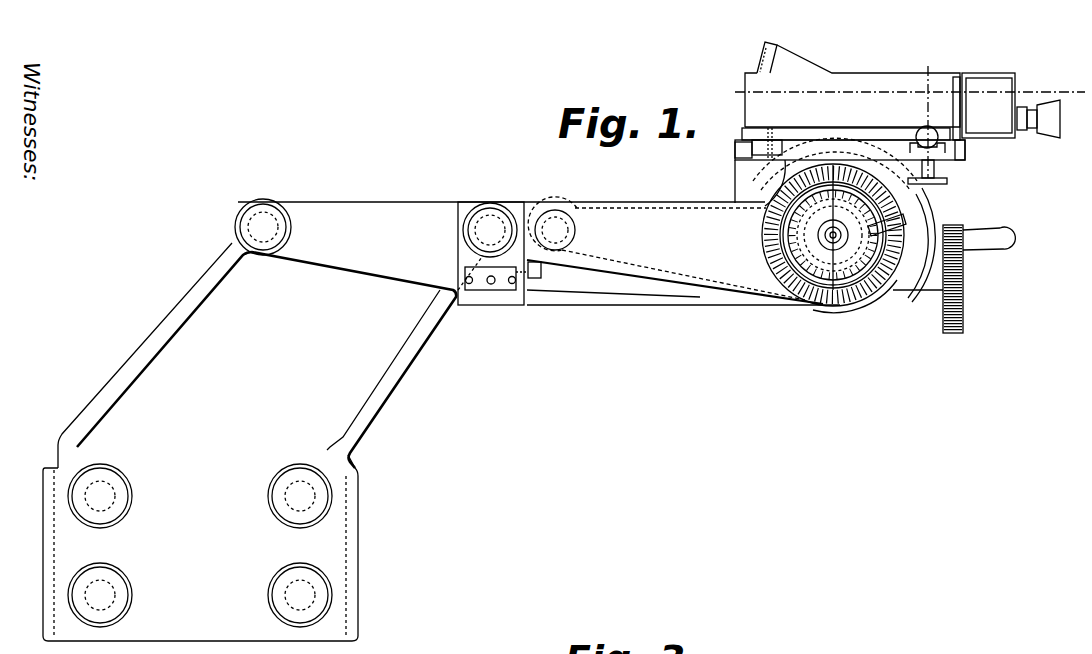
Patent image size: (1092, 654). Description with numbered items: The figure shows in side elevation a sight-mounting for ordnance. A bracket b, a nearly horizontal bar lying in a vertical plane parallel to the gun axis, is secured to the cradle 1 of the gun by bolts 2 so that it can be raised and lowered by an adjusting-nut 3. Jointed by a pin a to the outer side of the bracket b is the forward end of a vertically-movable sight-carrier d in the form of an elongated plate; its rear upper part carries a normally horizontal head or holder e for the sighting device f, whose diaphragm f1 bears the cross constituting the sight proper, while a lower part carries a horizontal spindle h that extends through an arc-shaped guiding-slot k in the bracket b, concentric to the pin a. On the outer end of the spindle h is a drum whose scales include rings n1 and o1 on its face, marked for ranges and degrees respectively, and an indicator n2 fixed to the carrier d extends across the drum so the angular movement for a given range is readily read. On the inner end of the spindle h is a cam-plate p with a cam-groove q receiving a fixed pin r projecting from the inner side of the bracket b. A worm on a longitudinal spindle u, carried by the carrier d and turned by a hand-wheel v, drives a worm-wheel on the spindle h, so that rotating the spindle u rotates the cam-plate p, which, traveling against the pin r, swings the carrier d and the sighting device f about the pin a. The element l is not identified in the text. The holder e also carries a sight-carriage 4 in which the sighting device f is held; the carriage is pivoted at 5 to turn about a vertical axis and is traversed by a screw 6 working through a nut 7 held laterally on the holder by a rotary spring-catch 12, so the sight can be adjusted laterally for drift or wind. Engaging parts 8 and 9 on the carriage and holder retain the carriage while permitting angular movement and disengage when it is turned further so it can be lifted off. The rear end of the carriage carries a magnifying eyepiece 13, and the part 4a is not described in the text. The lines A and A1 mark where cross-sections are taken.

The cradle 1 is at (318, 352).
The bolts 2 is at (379, 252).
The adjusting-nut 3 is at (503, 292).
The pin a is at (555, 230).
The bracket b is at (610, 300).
The arm brace l is at (822, 312).
The sight-carrier d is at (666, 248).
The head or holder e is at (760, 183).
The sighting device f is at (768, 130).
The diaphragm f1 is at (760, 60).
The sight-carriage 4 is at (910, 89).
The magnifying eyepiece 13 is at (998, 88).
The eyepiece 4a is at (964, 136).
The pivot 5 is at (742, 133).
The engaging parts 8 is at (738, 158).
The engaging parts 9 is at (738, 148).
The section line A A is at (833, 170).
The pin r is at (836, 150).
The cam-groove q is at (922, 216).
The rotary spring-catch or bolt 12 is at (946, 186).
The nut 7 is at (920, 149).
The traversing screw 6 is at (922, 126).
The section line A' A' A1 is at (931, 115).
The ring n1 is at (768, 231).
The ring o1 is at (778, 260).
The spindle h is at (843, 236).
The guiding-slot k is at (882, 218).
The cam-plate p is at (872, 302).
The longitudinal spindle u is at (918, 297).
The wheel v is at (963, 306).
The indicator n2 is at (963, 266).